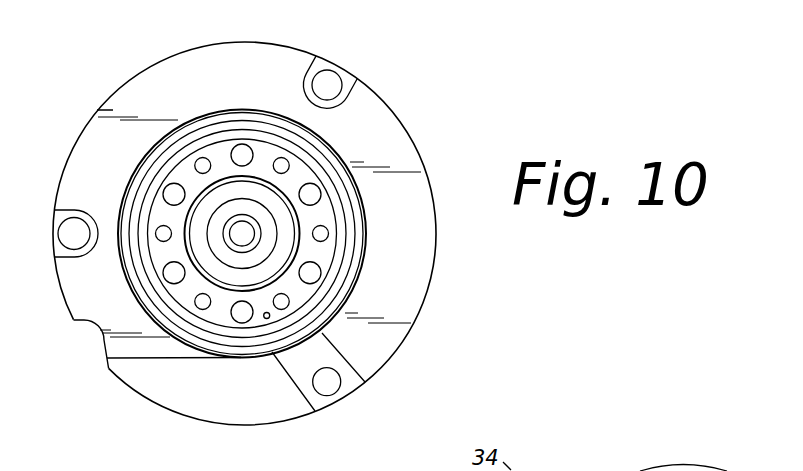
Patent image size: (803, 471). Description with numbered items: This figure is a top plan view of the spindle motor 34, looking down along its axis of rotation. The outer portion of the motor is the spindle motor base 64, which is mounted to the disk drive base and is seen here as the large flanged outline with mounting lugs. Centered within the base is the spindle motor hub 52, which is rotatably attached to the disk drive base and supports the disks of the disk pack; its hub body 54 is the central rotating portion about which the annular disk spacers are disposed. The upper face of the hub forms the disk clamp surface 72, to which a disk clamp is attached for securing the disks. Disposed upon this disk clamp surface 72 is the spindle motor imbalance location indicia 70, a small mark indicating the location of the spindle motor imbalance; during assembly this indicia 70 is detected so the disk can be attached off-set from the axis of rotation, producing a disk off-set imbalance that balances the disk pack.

The spindle motor 34 is at (110, 73).
The spindle motor base 64 is at (77, 157).
The spindle motor hub 52 is at (211, 142).
The hub body 54 is at (253, 140).
The disk clamp surface 72 is at (320, 255).
The spindle motor imbalance location indicia 70 is at (270, 322).